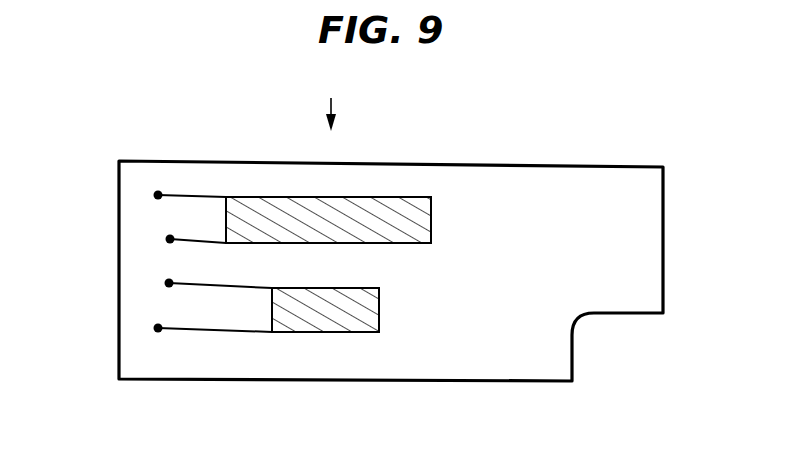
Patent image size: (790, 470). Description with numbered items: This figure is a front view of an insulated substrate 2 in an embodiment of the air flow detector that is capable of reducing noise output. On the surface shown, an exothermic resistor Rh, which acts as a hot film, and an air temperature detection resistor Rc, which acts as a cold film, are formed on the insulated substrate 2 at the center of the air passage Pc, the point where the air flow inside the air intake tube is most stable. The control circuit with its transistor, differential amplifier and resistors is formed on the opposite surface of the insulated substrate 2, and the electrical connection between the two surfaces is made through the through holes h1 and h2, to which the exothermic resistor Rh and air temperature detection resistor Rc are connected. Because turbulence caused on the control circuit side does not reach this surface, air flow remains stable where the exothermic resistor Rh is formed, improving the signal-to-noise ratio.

The insulated substrate 2 is at (628, 217).
The air temperature detection resistor Rc is at (415, 203).
The exothermic resistor Rh is at (318, 317).
The through hole h1 is at (158, 195).
The through hole h2 is at (169, 283).
The center of passage Pc is at (347, 111).